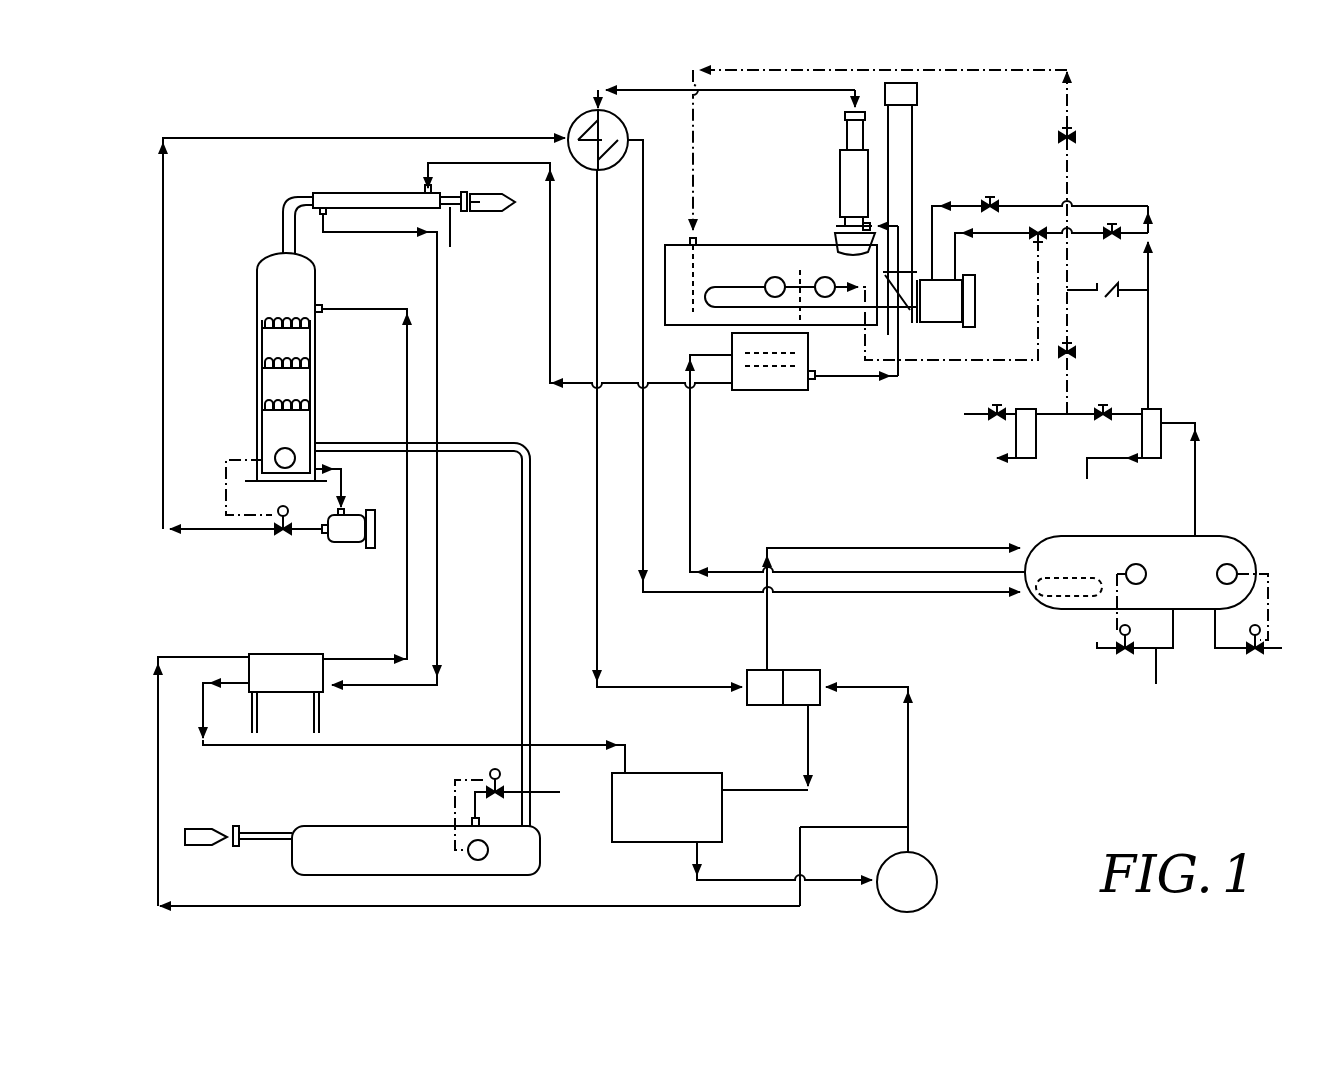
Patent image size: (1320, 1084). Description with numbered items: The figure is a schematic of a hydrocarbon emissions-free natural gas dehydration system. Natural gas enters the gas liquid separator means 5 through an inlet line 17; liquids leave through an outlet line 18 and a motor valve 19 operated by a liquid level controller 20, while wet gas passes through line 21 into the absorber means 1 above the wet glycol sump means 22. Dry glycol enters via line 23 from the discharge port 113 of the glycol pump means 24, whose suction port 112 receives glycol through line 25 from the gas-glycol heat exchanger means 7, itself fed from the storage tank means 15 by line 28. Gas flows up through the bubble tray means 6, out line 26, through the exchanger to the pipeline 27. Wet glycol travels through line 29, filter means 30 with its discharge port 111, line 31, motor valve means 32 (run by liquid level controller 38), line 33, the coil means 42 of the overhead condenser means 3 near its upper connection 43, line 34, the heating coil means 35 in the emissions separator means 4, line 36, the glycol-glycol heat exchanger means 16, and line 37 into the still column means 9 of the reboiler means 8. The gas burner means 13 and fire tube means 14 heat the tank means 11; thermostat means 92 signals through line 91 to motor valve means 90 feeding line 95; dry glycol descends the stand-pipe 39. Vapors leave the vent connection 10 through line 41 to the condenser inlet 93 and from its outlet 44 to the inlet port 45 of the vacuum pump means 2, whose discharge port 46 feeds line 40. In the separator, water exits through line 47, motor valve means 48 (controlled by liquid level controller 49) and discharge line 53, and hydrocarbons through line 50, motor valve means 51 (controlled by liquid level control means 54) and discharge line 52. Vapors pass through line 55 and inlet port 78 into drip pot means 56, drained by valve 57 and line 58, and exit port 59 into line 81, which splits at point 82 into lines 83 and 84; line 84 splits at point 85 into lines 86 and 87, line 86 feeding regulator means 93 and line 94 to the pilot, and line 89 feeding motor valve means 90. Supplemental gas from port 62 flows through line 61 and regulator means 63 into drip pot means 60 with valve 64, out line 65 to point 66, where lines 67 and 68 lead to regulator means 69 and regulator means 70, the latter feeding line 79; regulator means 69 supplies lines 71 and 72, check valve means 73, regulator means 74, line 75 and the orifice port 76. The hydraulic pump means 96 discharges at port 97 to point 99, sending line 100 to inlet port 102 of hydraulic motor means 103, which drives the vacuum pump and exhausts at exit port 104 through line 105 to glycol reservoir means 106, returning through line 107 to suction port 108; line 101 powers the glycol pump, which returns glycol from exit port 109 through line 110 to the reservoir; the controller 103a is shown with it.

The absorber means 1 is at (265, 262).
The vacuum pump means 2 is at (790, 670).
The overhead condenser means 3 is at (625, 118).
The three-phase emissions separator means 4 is at (1218, 538).
The gas liquid separator means 5 is at (362, 826).
The bubble tray means 6 is at (270, 410).
The gas-glycol heat exchanger means 7 is at (345, 193).
The glycol reboiler means 8 is at (727, 245).
The still column means 9 is at (840, 203).
The vent connection 10 is at (852, 108).
The reboiler tank means 11 is at (707, 308).
The gas burner means 13 is at (938, 325).
The fire tube means 14 is at (813, 327).
The dry glycol storage tank means 15 is at (770, 392).
The glycol-glycol heat exchanger means 16 is at (790, 376).
The inlet line 17 is at (265, 830).
The outlet line 18 is at (470, 792).
The motor valve 19 is at (505, 785).
The liquid level controller 20 is at (492, 850).
The line 21 is at (531, 518).
The wet glycol sump means 22 is at (250, 462).
The line 23 is at (330, 309).
The glycol pump means 24 is at (290, 654).
The line 25 is at (442, 420).
The line 26 is at (285, 200).
The pipeline 27 is at (470, 212).
The line 28 is at (553, 296).
The line 29 is at (345, 478).
The filter means 30 is at (370, 521).
The line 31 is at (305, 531).
The motor valve means 32 is at (272, 536).
The line 33 is at (180, 426).
The line 34 is at (640, 594).
The heating coil means 35 is at (1050, 598).
The line 36 is at (692, 480).
The line 37 is at (873, 380).
The liquid level controller 38 is at (290, 450).
The stand-pipe 39 is at (797, 270).
The line 40 is at (900, 548).
The line 41 is at (757, 92).
The coil means 42 is at (566, 136).
The inlet line 43 is at (596, 105).
The outlet 44 is at (600, 172).
The inlet port 45 is at (745, 692).
The discharge port 46 is at (760, 670).
The line 47 is at (1155, 684).
The motor valve means 48 is at (1120, 655).
The liquid level controller 49 is at (1140, 536).
The line 50 is at (1213, 650).
The motor valve means 51 is at (1254, 658).
The discharge line 52 is at (1280, 650).
The discharge line 53 is at (1097, 650).
The liquid level control means 54 is at (1236, 568).
The line 55 is at (1197, 471).
The drip pot means 56 is at (1162, 411).
The valve 57 is at (1125, 462).
The line 58 is at (1087, 478).
The port 59 is at (1150, 409).
The drip pot means 60 is at (1022, 462).
The line 61 is at (452, 248).
The port 62 is at (462, 212).
The regulator means 63 is at (990, 410).
The valve 64 is at (990, 462).
The line 65 is at (1072, 414).
The point 66 is at (1027, 460).
The line 67 is at (1067, 392).
The line 68 is at (1080, 418).
The regulator means 69 is at (1075, 351).
The regulator means 70 is at (1110, 410).
The line 71 is at (1069, 173).
The line 72 is at (1073, 292).
The check valve means 73 is at (1122, 288).
The regulator means 74 is at (1078, 136).
The line 75 is at (922, 70).
The port 76 is at (691, 228).
The inlet port 78 is at (1165, 432).
The line 79 is at (1115, 418).
The line 81 is at (1150, 312).
The point 82 is at (1122, 295).
The line 83 is at (1150, 345).
The line 84 is at (1150, 262).
The point 85 is at (1150, 235).
The line 86 is at (1030, 204).
The line 87 is at (1137, 213).
The line 89 is at (1058, 204).
The motor valve means 90 is at (1038, 242).
The line 91 is at (1012, 360).
The thermostat means 92 is at (825, 277).
The regulator means 93 is at (993, 200).
The line 94 is at (932, 205).
The line 95 is at (957, 256).
The hydraulic pump means 96 is at (933, 895).
The discharge port 97 is at (918, 856).
The point 99 is at (910, 830).
The line 100 is at (912, 740).
The line 101 is at (828, 827).
The inlet port 102 is at (825, 698).
The hydraulic motor means 103 is at (825, 672).
The controller 103a is at (246, 657).
The exit port 104 is at (812, 715).
The line 105 is at (770, 790).
The glycol reservoir means 106 is at (612, 838).
The line 107 is at (722, 880).
The suction port 108 is at (878, 888).
The exit port 109 is at (242, 684).
The line 110 is at (500, 745).
The discharge port 111 is at (325, 534).
The suction port 112 is at (330, 687).
The discharge port 113 is at (332, 659).